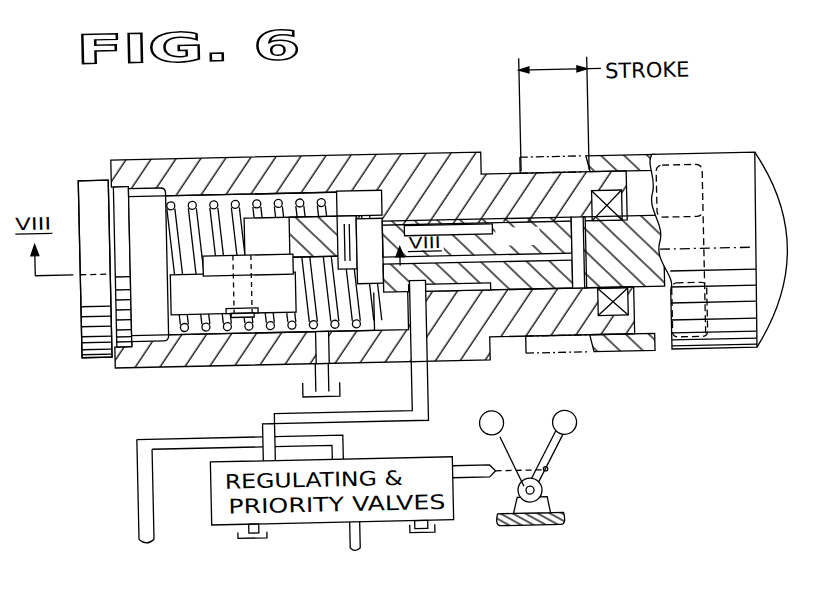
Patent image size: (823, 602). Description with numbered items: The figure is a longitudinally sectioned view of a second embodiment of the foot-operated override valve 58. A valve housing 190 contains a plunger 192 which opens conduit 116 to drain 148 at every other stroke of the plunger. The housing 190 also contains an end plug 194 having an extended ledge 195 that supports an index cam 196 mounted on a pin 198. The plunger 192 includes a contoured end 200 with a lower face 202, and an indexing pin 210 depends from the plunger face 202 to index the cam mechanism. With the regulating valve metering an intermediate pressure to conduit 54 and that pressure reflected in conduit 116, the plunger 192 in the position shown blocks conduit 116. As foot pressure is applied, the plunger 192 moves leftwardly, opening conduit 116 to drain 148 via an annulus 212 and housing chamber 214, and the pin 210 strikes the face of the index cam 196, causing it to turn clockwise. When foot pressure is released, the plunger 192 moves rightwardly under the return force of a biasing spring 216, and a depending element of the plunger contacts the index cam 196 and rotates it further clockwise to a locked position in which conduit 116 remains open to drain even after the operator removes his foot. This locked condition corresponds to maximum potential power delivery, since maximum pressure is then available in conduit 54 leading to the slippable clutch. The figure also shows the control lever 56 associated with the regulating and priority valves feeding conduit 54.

The conduit 54 is at (130, 489).
The control lever 56 is at (549, 458).
The foot-operated override valve 58 is at (105, 380).
The conduit 116 is at (415, 383).
The drain 148 is at (310, 392).
The valve housing 190 is at (199, 170).
The plunger 192 is at (708, 152).
The end plug 194 is at (87, 326).
The extended ledge 195 is at (288, 313).
The index cam 196 is at (222, 270).
The pin 198 is at (246, 283).
The contoured end 200 is at (273, 216).
The lower face 202 is at (307, 252).
The indexing pin 210 is at (361, 236).
The annulus 212 is at (472, 236).
The housing chamber 214 is at (297, 190).
The biasing spring 216 is at (322, 198).